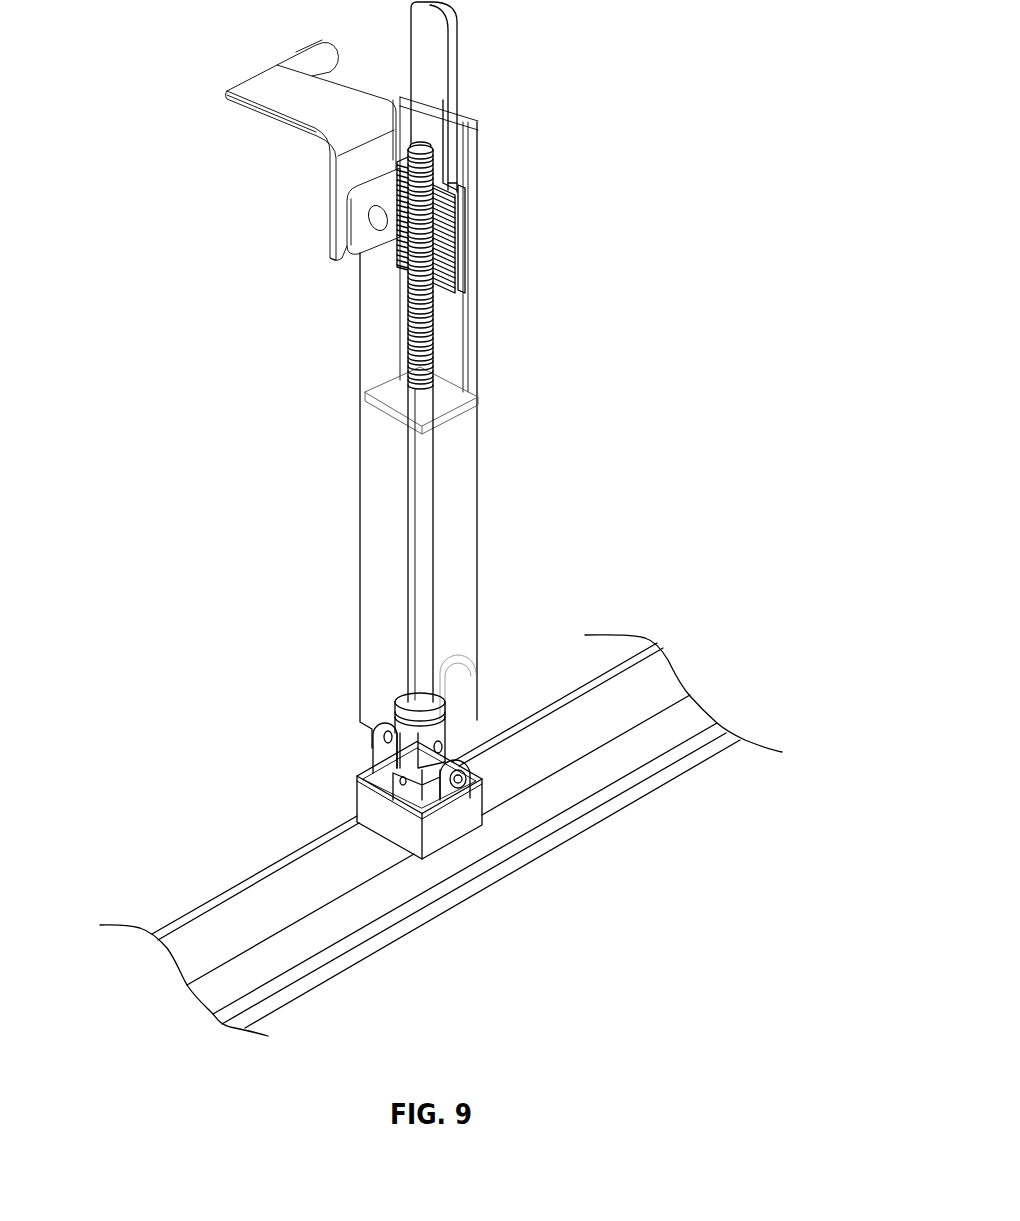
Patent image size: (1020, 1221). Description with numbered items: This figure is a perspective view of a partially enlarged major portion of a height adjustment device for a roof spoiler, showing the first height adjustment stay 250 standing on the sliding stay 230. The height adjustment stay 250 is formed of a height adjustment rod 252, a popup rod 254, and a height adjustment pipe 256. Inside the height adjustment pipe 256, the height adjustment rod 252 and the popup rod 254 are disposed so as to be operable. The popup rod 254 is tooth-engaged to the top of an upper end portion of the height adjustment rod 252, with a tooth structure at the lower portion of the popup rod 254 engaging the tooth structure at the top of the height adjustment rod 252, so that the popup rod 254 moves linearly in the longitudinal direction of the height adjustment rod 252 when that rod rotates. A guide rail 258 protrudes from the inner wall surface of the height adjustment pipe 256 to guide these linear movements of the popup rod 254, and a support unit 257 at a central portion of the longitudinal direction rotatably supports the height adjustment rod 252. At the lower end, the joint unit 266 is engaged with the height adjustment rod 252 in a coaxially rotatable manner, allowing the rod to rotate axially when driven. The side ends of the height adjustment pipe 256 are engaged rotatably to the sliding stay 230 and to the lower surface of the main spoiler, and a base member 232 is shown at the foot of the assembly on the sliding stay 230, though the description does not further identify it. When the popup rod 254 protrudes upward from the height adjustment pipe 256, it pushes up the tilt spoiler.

The sliding stay 230 is at (260, 858).
The base 232 is at (472, 817).
The first height adjustment stay 250 is at (346, 318).
The height adjustment rod 252 is at (437, 488).
The popup rod 254 is at (450, 78).
The height adjustment pipe 256 is at (360, 457).
The support unit 257 is at (447, 407).
The guide rail 258 is at (458, 338).
The joint unit 266 is at (478, 712).